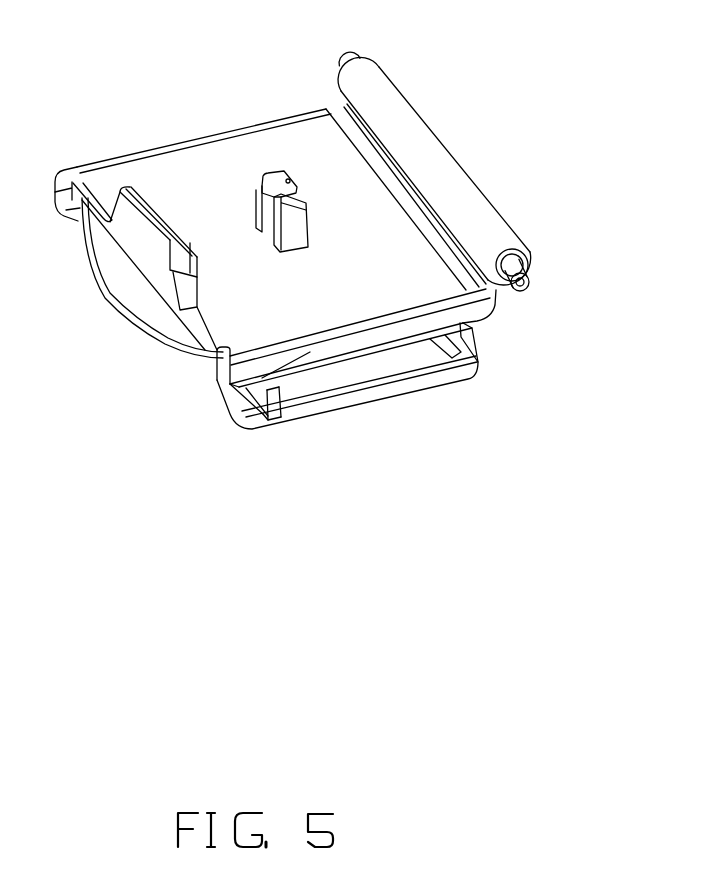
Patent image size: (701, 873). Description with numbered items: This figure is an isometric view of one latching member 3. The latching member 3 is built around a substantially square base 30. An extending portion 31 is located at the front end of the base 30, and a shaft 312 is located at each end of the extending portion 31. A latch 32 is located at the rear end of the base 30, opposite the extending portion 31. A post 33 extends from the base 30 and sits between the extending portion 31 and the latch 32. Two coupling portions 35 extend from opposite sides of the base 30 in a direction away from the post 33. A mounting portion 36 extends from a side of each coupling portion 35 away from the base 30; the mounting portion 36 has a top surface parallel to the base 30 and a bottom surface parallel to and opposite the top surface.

The latching member 3 is at (90, 90).
The base 30 is at (192, 177).
The extending portion 31 is at (492, 317).
The shaft 312 is at (530, 288).
The latch 32 is at (160, 290).
The post 33 is at (278, 193).
The coupling portion 35 is at (238, 404).
The mounting portion 36 is at (353, 372).